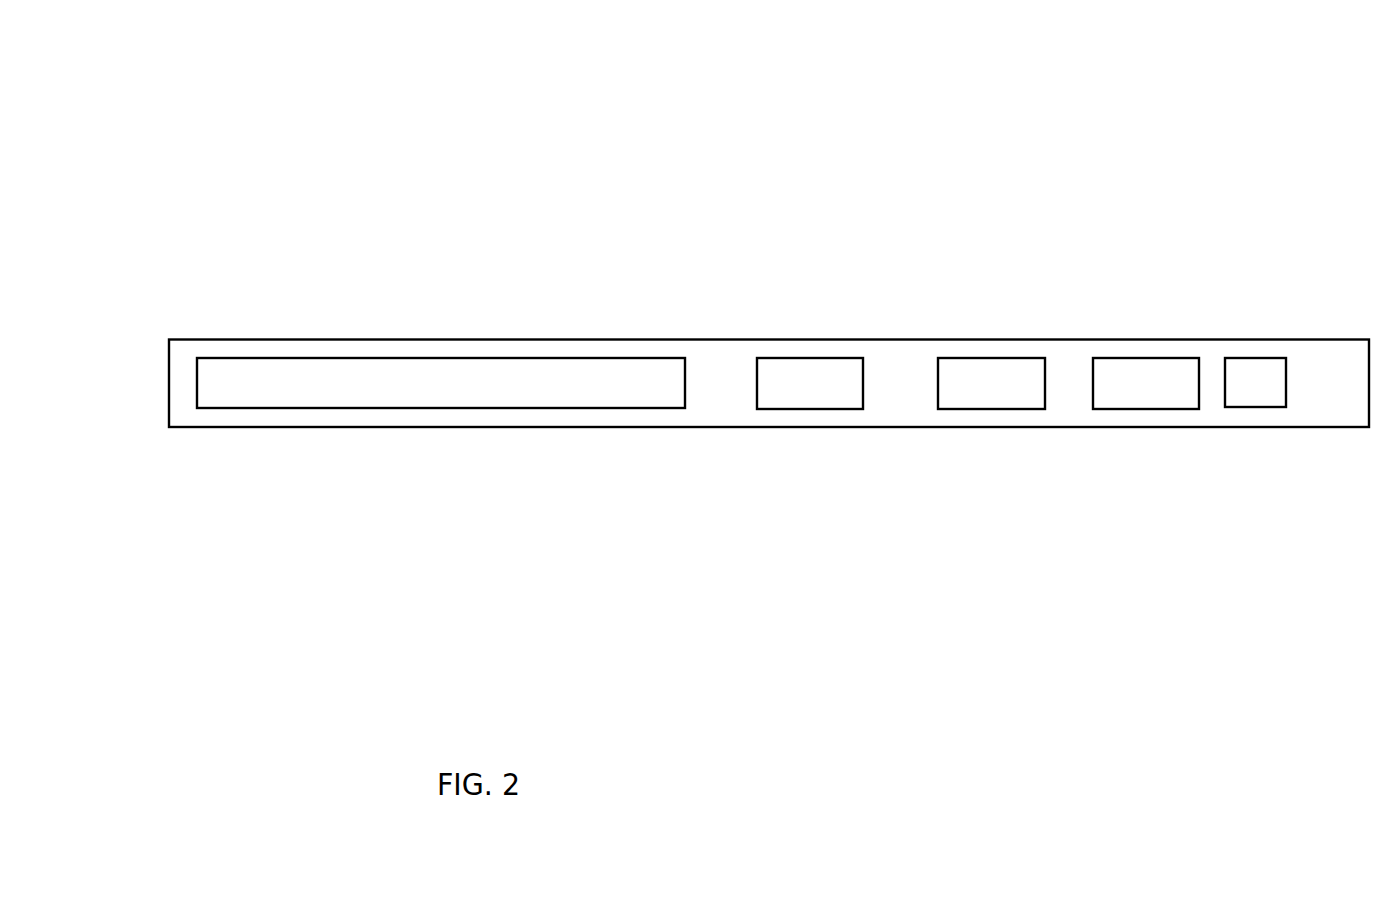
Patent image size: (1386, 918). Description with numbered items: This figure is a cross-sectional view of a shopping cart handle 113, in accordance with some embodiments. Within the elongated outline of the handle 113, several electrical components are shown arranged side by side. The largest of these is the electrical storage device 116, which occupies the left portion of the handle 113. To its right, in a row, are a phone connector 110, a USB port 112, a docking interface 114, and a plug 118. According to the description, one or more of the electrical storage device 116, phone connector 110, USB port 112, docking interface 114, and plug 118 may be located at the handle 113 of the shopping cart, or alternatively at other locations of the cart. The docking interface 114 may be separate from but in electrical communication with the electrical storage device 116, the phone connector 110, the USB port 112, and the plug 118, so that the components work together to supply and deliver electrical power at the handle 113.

The shopping cart handle 113 is at (1147, 115).
The electrical storage device 116 is at (463, 357).
The phone connector 110 is at (788, 358).
The USB port 112 is at (992, 358).
The docking interface 114 is at (1145, 358).
The plug 118 is at (1256, 358).